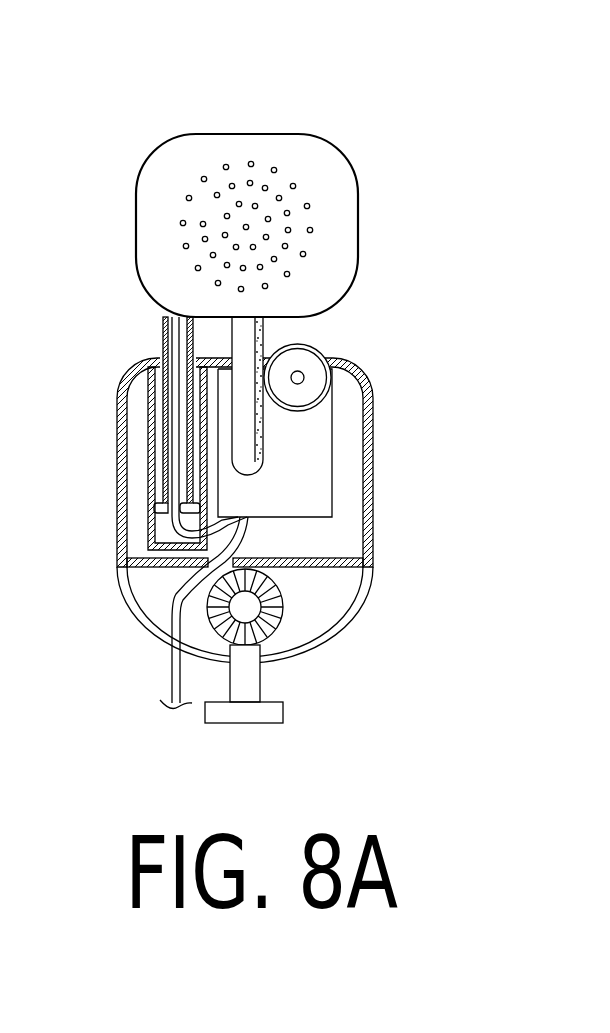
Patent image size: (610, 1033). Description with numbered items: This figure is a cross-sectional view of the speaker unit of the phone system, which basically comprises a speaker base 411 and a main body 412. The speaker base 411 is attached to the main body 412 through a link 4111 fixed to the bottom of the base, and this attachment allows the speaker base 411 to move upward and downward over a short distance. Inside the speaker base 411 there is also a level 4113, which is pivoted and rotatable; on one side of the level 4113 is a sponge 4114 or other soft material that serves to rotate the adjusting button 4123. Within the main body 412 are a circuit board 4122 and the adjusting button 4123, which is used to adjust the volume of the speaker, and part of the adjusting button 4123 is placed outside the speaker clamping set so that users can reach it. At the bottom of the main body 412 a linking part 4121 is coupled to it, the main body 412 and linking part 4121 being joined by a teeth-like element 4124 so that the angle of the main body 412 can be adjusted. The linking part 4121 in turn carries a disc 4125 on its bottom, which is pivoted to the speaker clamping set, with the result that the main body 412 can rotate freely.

The speaker base 411 is at (308, 148).
The link 4111 is at (160, 322).
The level 4113 is at (247, 335).
The sponge 4114 is at (262, 435).
The main body 412 is at (372, 537).
The linking part 4121 is at (253, 678).
The circuit board 4122 is at (323, 498).
The adjusting button 4123 is at (330, 348).
The teeth-like element 4124 is at (273, 598).
The disc 4125 is at (270, 712).